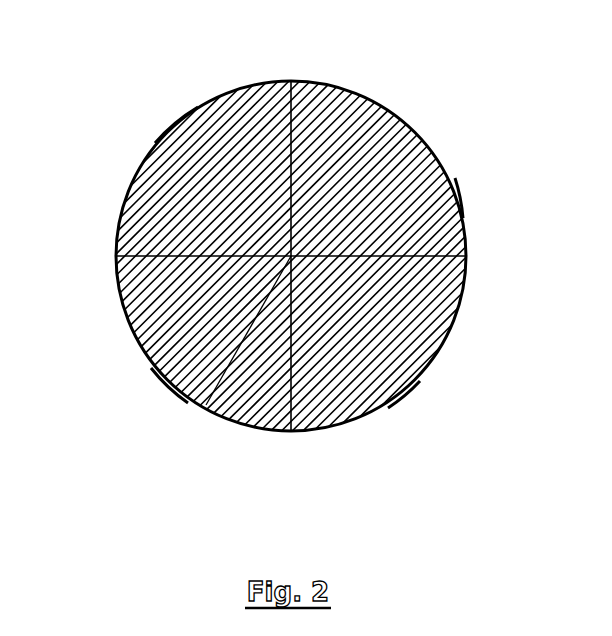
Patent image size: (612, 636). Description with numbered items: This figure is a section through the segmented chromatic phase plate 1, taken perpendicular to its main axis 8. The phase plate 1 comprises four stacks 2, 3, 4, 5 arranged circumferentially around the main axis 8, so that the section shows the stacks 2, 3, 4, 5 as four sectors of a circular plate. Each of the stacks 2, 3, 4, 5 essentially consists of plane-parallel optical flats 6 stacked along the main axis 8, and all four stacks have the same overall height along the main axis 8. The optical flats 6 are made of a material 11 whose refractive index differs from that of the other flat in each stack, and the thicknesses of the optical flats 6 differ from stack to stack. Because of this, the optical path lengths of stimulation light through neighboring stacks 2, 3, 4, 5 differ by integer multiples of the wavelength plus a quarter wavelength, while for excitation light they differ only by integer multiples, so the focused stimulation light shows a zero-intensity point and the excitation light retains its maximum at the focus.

The segmented chromatic phase plate 1 is at (328, 263).
The stack 2 is at (137, 126).
The stack 3 is at (459, 163).
The stack 4 is at (422, 383).
The stack 5 is at (133, 370).
The plane-parallel optical flat 6 is at (385, 135).
The main axis 8 is at (198, 397).
The material 11 is at (188, 132).